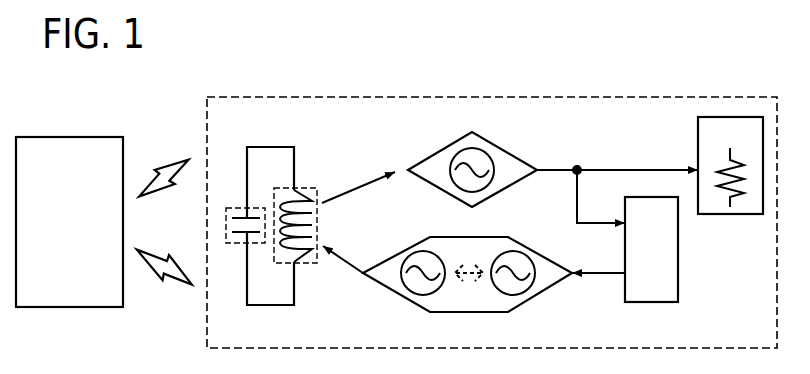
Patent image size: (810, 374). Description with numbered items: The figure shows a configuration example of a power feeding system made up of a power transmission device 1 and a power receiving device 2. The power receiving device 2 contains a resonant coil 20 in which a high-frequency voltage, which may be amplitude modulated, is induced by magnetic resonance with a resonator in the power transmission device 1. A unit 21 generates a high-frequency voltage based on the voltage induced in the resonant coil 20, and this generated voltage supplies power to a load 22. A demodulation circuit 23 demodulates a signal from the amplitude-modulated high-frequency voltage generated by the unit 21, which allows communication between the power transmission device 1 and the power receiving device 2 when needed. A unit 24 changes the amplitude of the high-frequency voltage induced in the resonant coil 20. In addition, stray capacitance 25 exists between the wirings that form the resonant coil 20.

The power transmission device 1 is at (69, 222).
The power receiving device 2 is at (492, 222).
The resonant coil 20 is at (302, 265).
The unit configured to generate a high-frequency voltage 21 is at (435, 153).
The load 22 is at (730, 165).
The demodulation circuit 23 is at (651, 249).
The unit configured to change amplitude 24 is at (413, 247).
The stray capacitance 25 is at (240, 208).